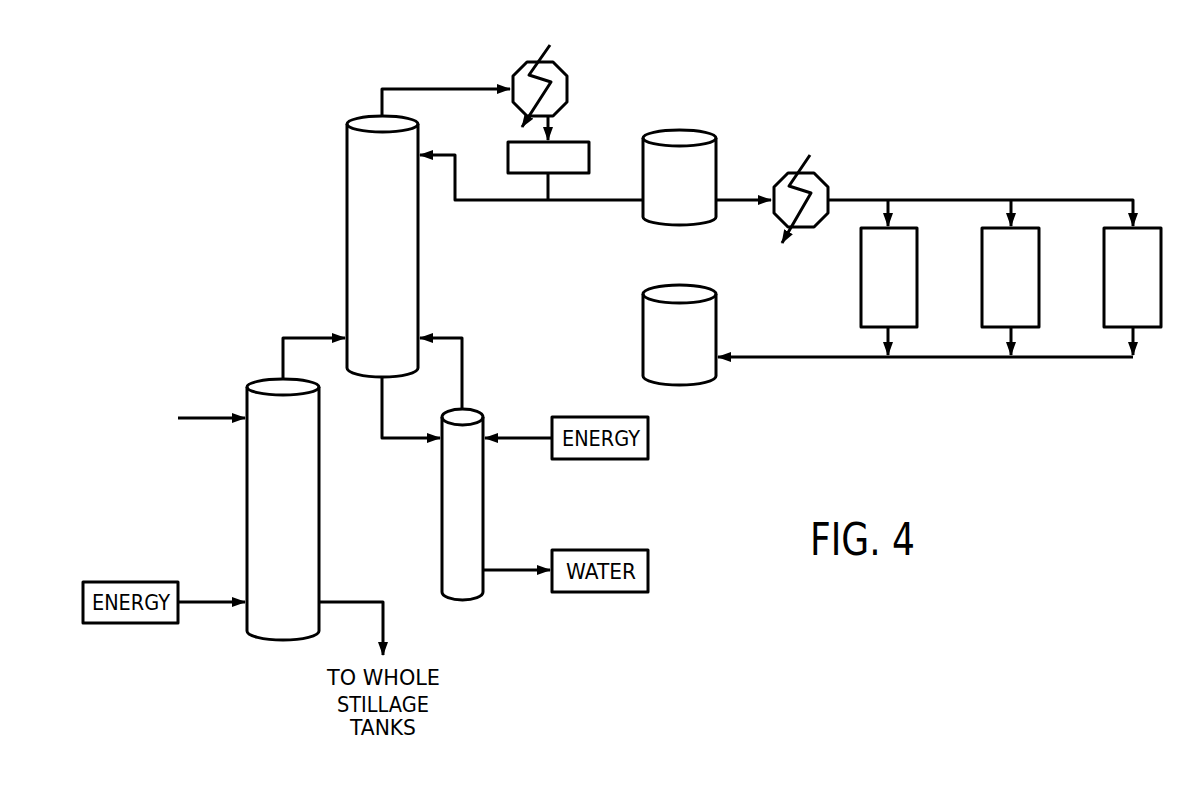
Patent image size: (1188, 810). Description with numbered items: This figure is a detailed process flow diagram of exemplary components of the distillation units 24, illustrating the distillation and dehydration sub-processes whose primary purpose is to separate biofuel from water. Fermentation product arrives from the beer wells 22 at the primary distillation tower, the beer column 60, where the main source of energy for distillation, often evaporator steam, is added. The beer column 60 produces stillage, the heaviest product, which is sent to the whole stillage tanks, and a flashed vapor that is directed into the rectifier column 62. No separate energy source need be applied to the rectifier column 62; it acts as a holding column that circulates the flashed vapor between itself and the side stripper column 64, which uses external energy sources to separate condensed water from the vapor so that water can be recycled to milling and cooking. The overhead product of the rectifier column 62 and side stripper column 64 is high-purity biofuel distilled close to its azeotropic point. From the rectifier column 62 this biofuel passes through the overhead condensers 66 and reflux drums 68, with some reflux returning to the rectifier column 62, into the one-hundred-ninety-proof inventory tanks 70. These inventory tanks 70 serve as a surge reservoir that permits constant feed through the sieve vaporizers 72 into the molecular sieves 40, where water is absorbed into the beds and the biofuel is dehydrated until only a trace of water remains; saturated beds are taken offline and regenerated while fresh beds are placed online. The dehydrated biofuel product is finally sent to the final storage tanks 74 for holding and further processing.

The distillation units 24 is at (222, 182).
The beer wells 22 is at (152, 415).
The molecular sieves 40 is at (861, 305).
The beer column 60 is at (247, 535).
The rectifier column 62 is at (347, 208).
The side stripper column 64 is at (442, 532).
The overhead condensers 66 is at (563, 70).
The reflux drums 68 is at (508, 160).
The 190-proof inventory tanks 70 is at (663, 130).
The sieve vaporizers 72 is at (822, 180).
The final storage tanks 74 is at (643, 325).